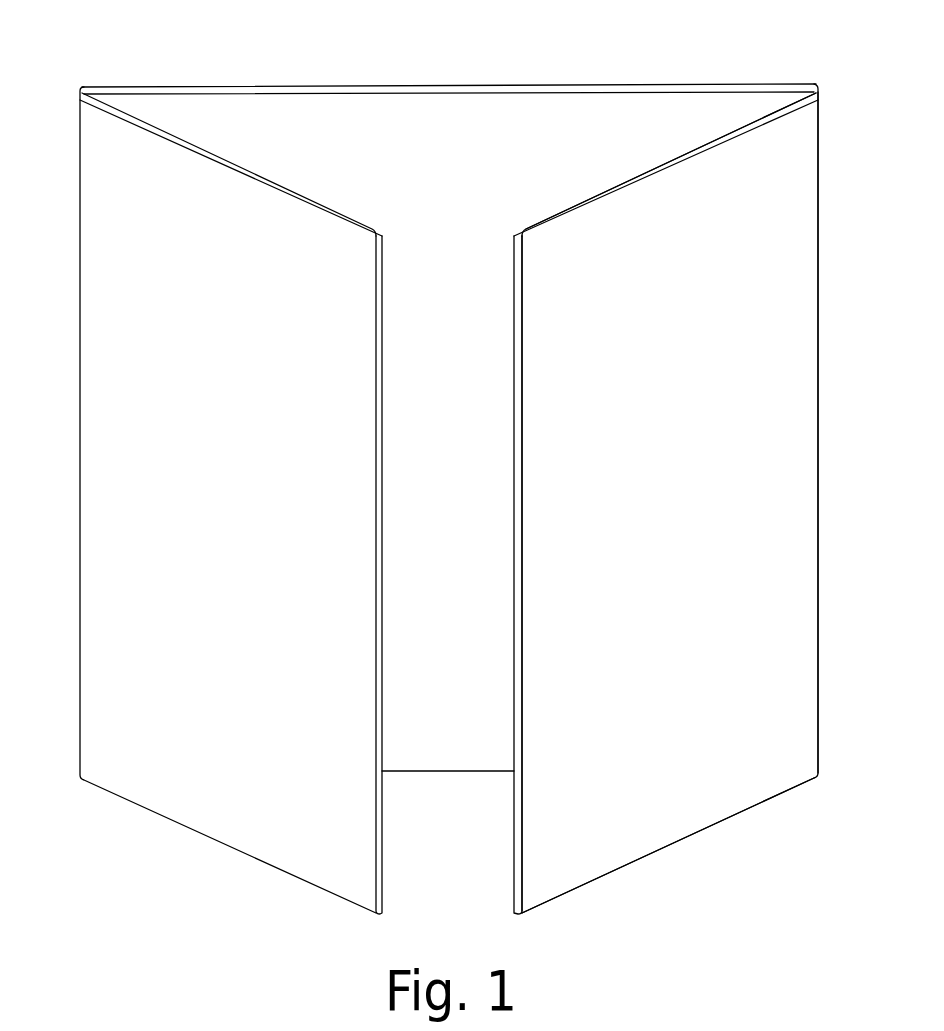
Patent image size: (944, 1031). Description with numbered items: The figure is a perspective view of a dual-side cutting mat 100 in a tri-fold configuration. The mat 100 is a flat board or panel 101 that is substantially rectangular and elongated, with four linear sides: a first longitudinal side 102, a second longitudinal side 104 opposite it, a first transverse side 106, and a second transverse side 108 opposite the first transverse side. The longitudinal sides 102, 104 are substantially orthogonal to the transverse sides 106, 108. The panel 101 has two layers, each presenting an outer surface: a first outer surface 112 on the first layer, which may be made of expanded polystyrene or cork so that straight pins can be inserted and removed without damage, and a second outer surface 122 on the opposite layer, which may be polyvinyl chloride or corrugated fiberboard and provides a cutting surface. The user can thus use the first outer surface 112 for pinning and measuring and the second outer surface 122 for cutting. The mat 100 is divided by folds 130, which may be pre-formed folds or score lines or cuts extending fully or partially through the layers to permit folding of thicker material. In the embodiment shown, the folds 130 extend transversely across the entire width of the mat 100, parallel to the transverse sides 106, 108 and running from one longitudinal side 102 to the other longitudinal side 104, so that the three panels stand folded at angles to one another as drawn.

The cutting mat 100 is at (462, 474).
The panel 101 is at (813, 86).
The first longitudinal side 102 is at (630, 86).
The second longitudinal side 104 is at (437, 772).
The first transverse side 106 is at (513, 389).
The second transverse side 108 is at (383, 297).
The first outer surface 112 is at (693, 591).
The second outer surface 122 is at (462, 158).
The folds 130 is at (83, 87).